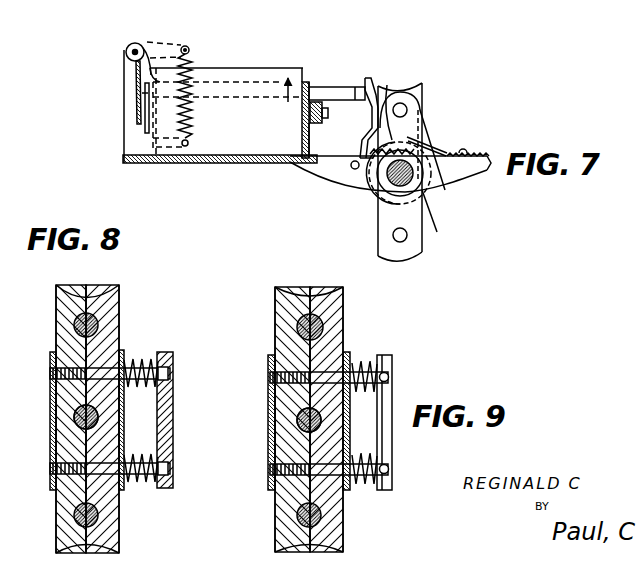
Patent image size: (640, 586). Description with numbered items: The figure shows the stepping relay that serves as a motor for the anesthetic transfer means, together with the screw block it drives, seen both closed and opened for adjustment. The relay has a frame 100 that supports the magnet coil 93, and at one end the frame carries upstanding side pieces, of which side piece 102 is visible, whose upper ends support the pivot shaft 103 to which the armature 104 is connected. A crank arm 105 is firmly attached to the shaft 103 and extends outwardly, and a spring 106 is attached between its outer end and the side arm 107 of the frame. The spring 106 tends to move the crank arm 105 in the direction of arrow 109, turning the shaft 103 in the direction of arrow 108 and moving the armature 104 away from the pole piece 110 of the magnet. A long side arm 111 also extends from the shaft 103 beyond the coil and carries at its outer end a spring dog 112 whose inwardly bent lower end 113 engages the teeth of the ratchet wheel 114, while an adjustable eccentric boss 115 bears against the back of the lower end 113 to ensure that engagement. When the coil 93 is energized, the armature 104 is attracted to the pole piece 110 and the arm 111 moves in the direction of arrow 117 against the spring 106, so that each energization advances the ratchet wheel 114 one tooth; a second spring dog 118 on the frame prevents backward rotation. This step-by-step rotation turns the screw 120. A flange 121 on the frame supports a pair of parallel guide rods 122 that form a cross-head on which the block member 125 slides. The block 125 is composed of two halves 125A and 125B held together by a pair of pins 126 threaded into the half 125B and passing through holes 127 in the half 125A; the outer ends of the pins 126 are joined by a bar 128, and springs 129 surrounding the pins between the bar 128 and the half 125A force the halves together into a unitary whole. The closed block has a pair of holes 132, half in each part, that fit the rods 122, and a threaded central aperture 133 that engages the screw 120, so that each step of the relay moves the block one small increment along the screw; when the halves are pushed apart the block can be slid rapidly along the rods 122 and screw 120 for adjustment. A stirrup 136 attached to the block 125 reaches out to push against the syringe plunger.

In FIG. 7, the magnet coil 93 is at (242, 137).
In FIG. 7, the frame 100 is at (324, 181).
In FIG. 7, the side piece 102 is at (127, 140).
In FIG. 7, the pivot shaft 103 is at (125, 52).
In FIG. 7, the armature 104 is at (137, 75).
In FIG. 7, the crank arm 105 is at (192, 42).
In FIG. 7, the spring 106 is at (195, 63).
In FIG. 7, the side arm 107 is at (192, 163).
In FIG. 7, the arrow 108 is at (129, 35).
In FIG. 7, the arrow 109 is at (172, 42).
In FIG. 7, the pole piece 110 is at (138, 110).
In FIG. 7, the long side arm 111 is at (342, 83).
In FIG. 7, the spring dog 112 is at (375, 117).
In FIG. 7, the inwardly bent lower end 113 is at (363, 150).
In FIG. 7, the ratchet wheel 114 is at (415, 155).
In FIG. 7, the eccentric boss 115 is at (355, 170).
In FIG. 7, the arrow 117 is at (303, 73).
In FIG. 7, the spring dog 118 is at (443, 152).
In FIG. 7, the screw 120 is at (416, 187).
In FIG. 8, the screw 120 is at (77, 415).
In FIG. 9, the screw 120 is at (297, 418).
In FIG. 7, the flange 121 is at (424, 217).
In FIG. 7, the guide rods 122 is at (404, 110).
In FIG. 8, the guide rods 122 is at (80, 295).
In FIG. 9, the guide rods 122 is at (312, 298).
In FIG. 7, the block member 125 is at (409, 85).
In FIG. 8, the block member 125 is at (121, 297).
In FIG. 9, the block member 125 is at (347, 300).
In FIG. 7, the block half 125A is at (420, 93).
In FIG. 8, the block half 125A is at (116, 322).
In FIG. 9, the block half 125A is at (345, 320).
In FIG. 7, the block half 125B is at (386, 83).
In FIG. 8, the block half 125B is at (58, 295).
In FIG. 9, the block half 125B is at (285, 290).
In FIG. 8, the pins 126 is at (148, 363).
In FIG. 9, the pins 126 is at (388, 378).
In FIG. 8, the holes 127 is at (110, 362).
In FIG. 9, the holes 127 is at (337, 362).
In FIG. 8, the bar 128 is at (173, 405).
In FIG. 9, the bar 128 is at (389, 443).
In FIG. 8, the springs 129 is at (140, 354).
In FIG. 9, the springs 129 is at (368, 358).
In FIG. 8, the holes 132 is at (94, 330).
In FIG. 9, the holes 132 is at (323, 322).
In FIG. 8, the central aperture 133 is at (72, 422).
In FIG. 9, the central aperture 133 is at (297, 425).
In FIG. 8, the stirrup 136 is at (53, 490).
In FIG. 9, the stirrup 136 is at (268, 356).